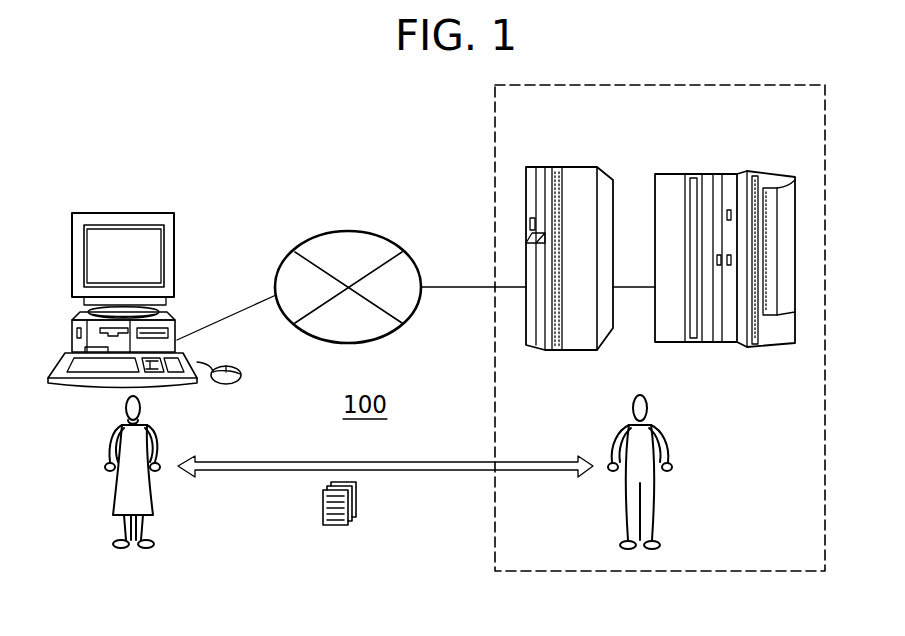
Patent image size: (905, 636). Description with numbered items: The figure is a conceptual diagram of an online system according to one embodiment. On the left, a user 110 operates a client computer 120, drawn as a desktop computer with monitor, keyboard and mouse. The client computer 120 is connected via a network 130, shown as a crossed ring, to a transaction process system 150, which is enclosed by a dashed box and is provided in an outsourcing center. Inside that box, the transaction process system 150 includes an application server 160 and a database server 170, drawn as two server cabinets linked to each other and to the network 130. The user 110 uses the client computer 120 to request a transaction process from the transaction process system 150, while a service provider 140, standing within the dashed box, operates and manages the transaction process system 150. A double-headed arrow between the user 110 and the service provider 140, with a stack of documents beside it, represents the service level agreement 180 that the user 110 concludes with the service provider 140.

The user 110 is at (162, 432).
The client computer 120 is at (150, 212).
The network 130 is at (350, 231).
The service provider 140 is at (668, 440).
The transaction process system 150 is at (494, 133).
The application server 160 is at (583, 167).
The database server 170 is at (770, 172).
The service level agreement 180 is at (368, 505).